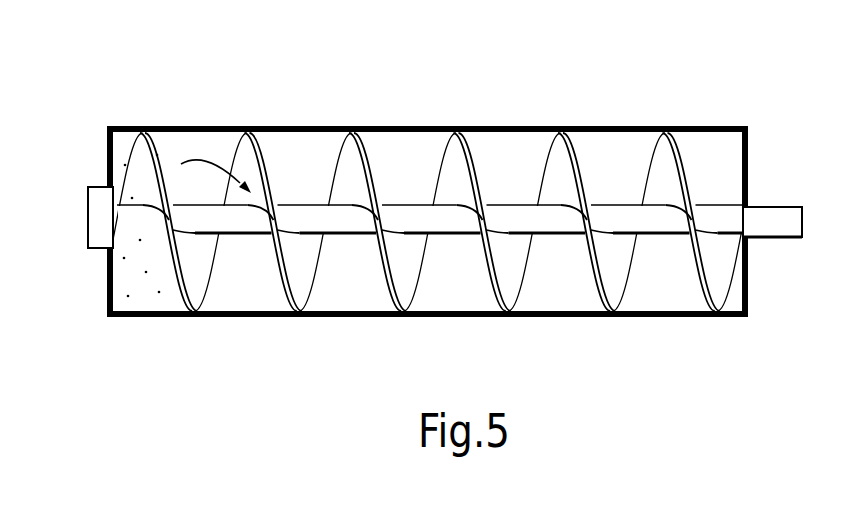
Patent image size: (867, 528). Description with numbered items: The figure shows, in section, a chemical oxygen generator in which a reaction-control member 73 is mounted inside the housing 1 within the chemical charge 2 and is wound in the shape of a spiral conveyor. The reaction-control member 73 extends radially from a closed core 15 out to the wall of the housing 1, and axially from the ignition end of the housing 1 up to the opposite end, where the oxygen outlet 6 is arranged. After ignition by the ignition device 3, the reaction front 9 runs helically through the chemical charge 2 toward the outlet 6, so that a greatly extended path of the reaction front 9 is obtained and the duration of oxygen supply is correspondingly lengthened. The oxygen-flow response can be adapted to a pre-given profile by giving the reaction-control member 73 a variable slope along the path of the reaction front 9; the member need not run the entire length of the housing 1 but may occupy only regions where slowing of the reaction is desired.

The housing 1 is at (203, 317).
The chemical charge 2 is at (142, 288).
The ignition device 3 is at (88, 200).
The oxygen outlet 6 is at (777, 218).
The reaction front 9 is at (201, 157).
The closed core 15 is at (662, 220).
The reaction-control member 73 is at (429, 269).